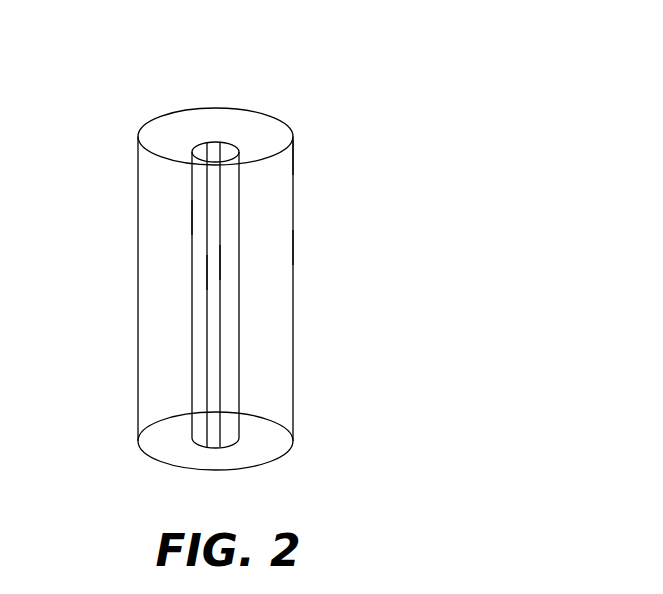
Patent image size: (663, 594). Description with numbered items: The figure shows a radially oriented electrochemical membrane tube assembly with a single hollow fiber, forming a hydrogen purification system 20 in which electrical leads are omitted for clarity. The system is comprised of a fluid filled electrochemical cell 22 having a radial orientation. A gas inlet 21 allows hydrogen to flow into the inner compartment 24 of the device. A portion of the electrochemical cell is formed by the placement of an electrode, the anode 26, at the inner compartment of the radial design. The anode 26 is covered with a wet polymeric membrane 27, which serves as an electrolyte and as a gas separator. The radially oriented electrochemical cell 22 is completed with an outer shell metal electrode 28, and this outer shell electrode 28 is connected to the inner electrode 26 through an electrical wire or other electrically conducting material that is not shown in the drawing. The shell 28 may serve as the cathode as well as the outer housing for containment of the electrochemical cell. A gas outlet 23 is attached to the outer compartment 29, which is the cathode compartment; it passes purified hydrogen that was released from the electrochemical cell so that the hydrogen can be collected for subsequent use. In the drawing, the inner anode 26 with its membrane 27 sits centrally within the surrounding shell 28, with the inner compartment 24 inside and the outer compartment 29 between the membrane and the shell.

The hydrogen purification system 20 is at (468, 130).
The gas inlet 21 is at (210, 147).
The electrochemical cell 22 is at (138, 350).
The gas outlet 23 is at (297, 166).
The inner compartment 24 is at (200, 272).
The anode 26 is at (220, 258).
The wet polymeric membrane 27 is at (192, 216).
The outer shell metal electrode 28 is at (293, 245).
The outer compartment 29 is at (272, 183).